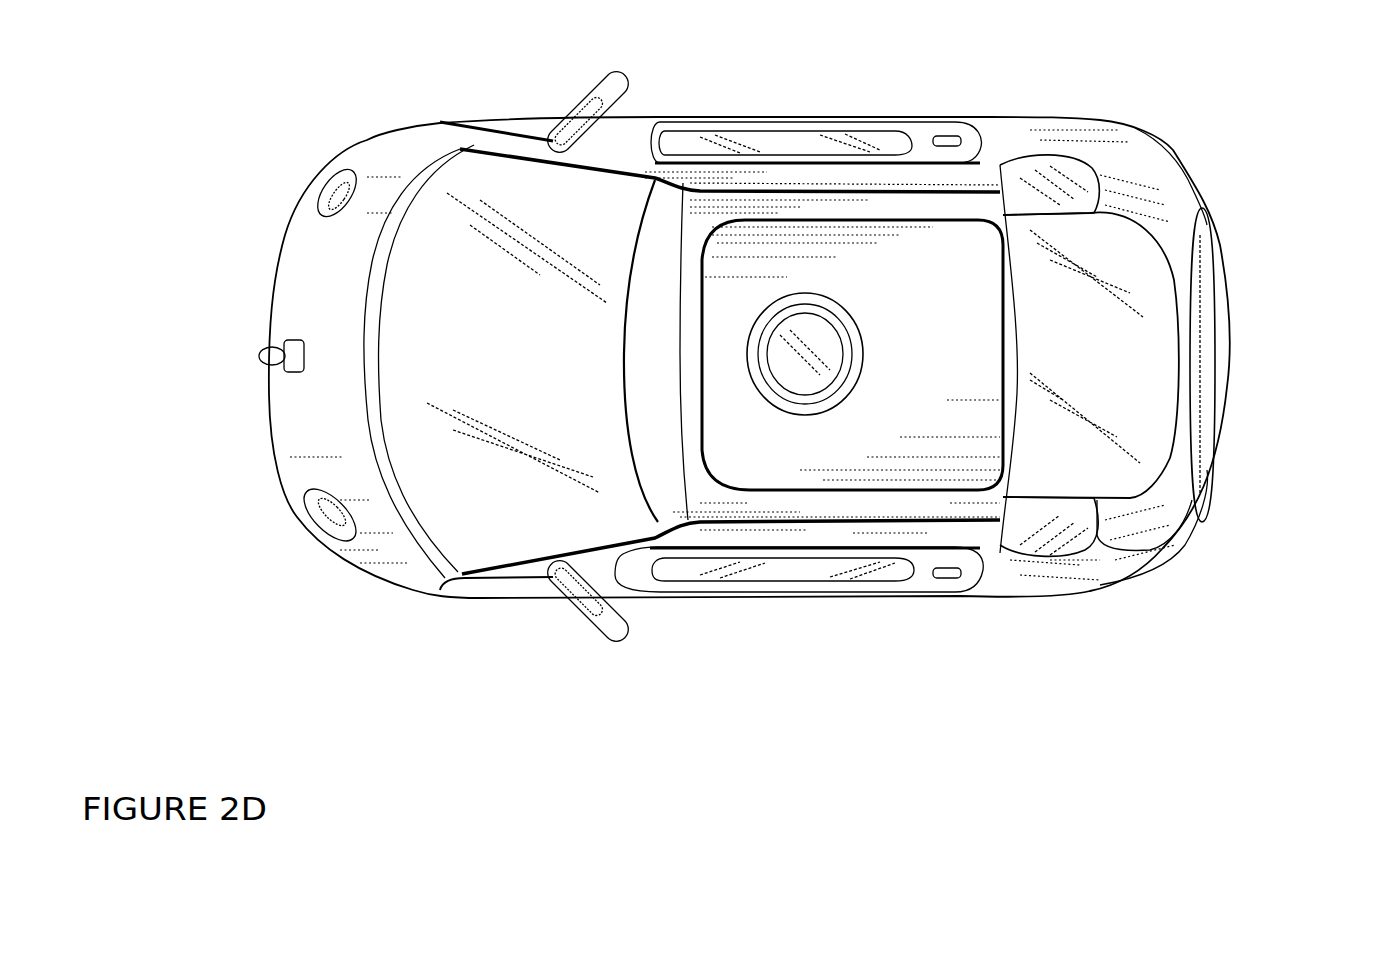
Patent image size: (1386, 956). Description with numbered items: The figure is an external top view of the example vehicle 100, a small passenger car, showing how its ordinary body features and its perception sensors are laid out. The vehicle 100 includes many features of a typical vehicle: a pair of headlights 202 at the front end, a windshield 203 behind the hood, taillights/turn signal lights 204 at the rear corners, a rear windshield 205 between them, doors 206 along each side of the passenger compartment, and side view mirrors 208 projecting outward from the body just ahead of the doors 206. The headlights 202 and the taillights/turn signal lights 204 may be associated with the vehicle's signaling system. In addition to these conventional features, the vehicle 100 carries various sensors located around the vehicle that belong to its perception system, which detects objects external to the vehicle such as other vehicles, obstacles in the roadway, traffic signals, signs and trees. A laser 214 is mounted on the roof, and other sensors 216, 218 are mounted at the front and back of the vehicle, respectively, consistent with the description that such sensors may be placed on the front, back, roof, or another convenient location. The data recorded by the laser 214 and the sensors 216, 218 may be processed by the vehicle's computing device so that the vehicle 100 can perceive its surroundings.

The vehicle 100 is at (193, 777).
The headlights 202 is at (322, 177).
The windshield 203 is at (435, 230).
The taillights/turn signal lights 204 is at (1093, 198).
The rear windshield 205 is at (1160, 308).
The doors 206 is at (853, 120).
The side view mirrors 208 is at (618, 87).
The laser 214 is at (805, 373).
The sensor 216 is at (285, 352).
The sensor 218 is at (1223, 360).